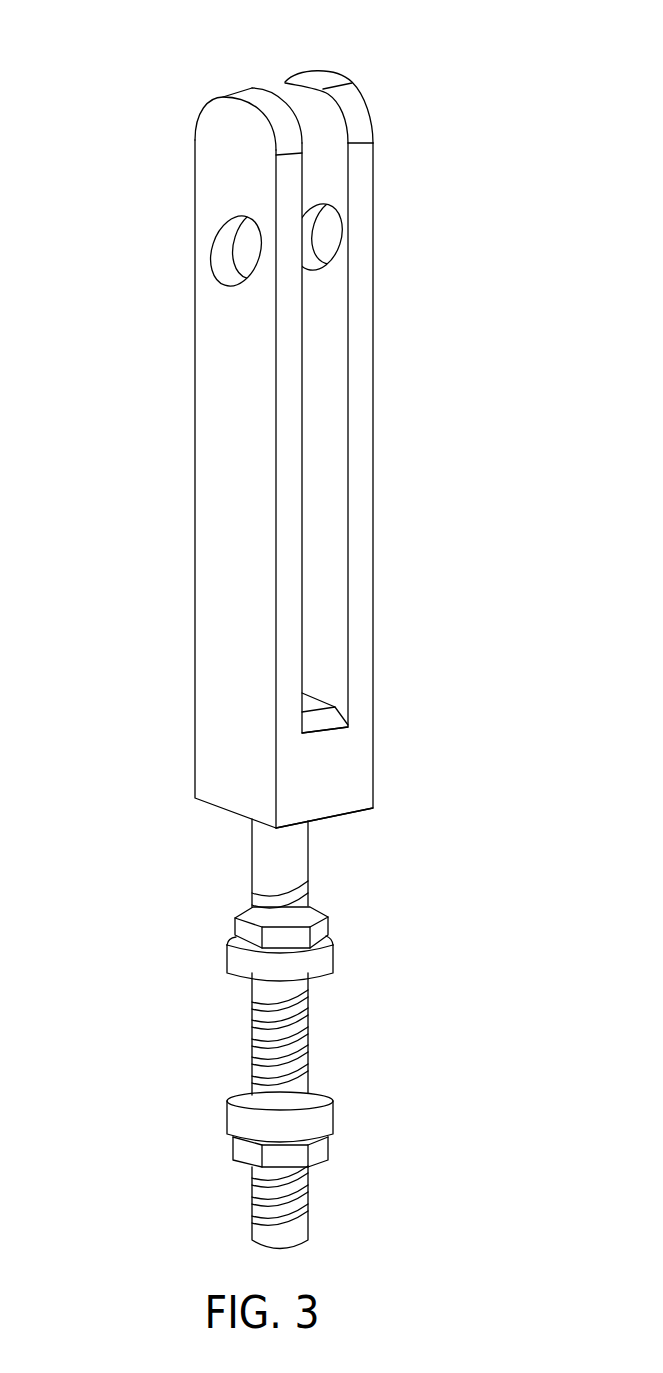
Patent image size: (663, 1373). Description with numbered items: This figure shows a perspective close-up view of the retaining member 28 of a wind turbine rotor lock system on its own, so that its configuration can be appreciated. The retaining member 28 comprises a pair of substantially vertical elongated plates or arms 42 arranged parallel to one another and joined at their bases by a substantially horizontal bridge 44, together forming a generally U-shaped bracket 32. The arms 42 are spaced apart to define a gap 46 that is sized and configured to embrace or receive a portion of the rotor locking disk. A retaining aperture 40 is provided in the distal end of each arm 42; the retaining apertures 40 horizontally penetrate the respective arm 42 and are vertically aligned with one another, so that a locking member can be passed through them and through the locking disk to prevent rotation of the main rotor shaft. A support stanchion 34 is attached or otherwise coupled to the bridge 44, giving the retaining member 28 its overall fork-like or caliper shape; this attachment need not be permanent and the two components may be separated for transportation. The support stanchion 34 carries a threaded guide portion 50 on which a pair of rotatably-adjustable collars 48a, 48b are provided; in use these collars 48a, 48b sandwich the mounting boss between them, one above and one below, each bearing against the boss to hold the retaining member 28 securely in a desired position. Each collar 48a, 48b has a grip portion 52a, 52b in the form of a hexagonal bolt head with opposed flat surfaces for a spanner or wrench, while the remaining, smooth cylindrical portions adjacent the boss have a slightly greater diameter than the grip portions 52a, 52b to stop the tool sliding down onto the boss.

The retaining member 28 is at (152, 82).
The U-shaped bracket 32 is at (442, 70).
The support stanchion 34 is at (85, 835).
The retaining aperture 40 is at (227, 230).
The arms 42 is at (213, 113).
The bridge 44 is at (357, 783).
The gap 46 is at (333, 615).
The adjustment collar 48a is at (325, 967).
The adjustment collar 48b is at (238, 1118).
The threaded guide portion 50 is at (385, 858).
The grip portion 52a is at (320, 930).
The grip portion 52b is at (242, 1150).